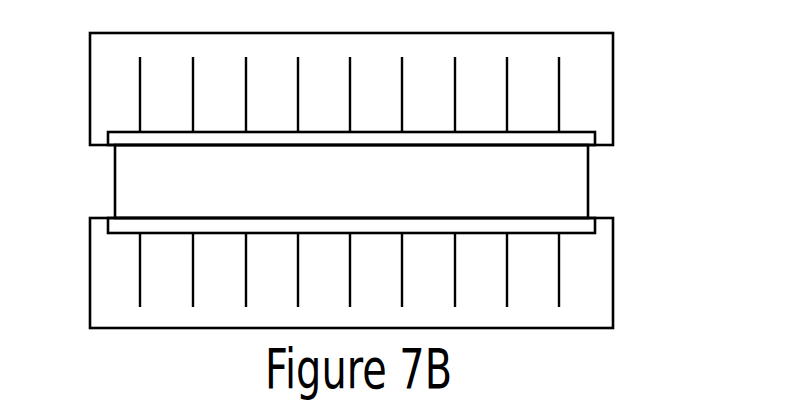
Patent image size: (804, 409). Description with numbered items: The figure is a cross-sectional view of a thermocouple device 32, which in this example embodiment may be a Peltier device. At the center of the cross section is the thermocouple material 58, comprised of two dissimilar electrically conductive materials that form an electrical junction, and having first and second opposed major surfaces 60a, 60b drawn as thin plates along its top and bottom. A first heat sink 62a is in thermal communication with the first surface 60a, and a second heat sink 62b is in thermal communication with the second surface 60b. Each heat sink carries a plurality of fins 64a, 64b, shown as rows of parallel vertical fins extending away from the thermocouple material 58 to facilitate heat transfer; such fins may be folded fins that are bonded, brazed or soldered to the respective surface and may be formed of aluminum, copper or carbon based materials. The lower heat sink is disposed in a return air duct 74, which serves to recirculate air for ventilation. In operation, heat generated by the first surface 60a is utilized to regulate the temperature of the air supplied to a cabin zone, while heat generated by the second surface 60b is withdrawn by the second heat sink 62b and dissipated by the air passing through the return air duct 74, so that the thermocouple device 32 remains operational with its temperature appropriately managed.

The thermocouple device 32 is at (364, 188).
The thermocouple material 58 is at (367, 196).
The first surface 60a is at (100, 147).
The second surface 60b is at (105, 218).
The first heat sink 62a is at (351, 74).
The second heat sink 62b is at (356, 303).
The fins 64a is at (270, 82).
The fins 64b is at (249, 255).
The return air duct 74 is at (380, 295).